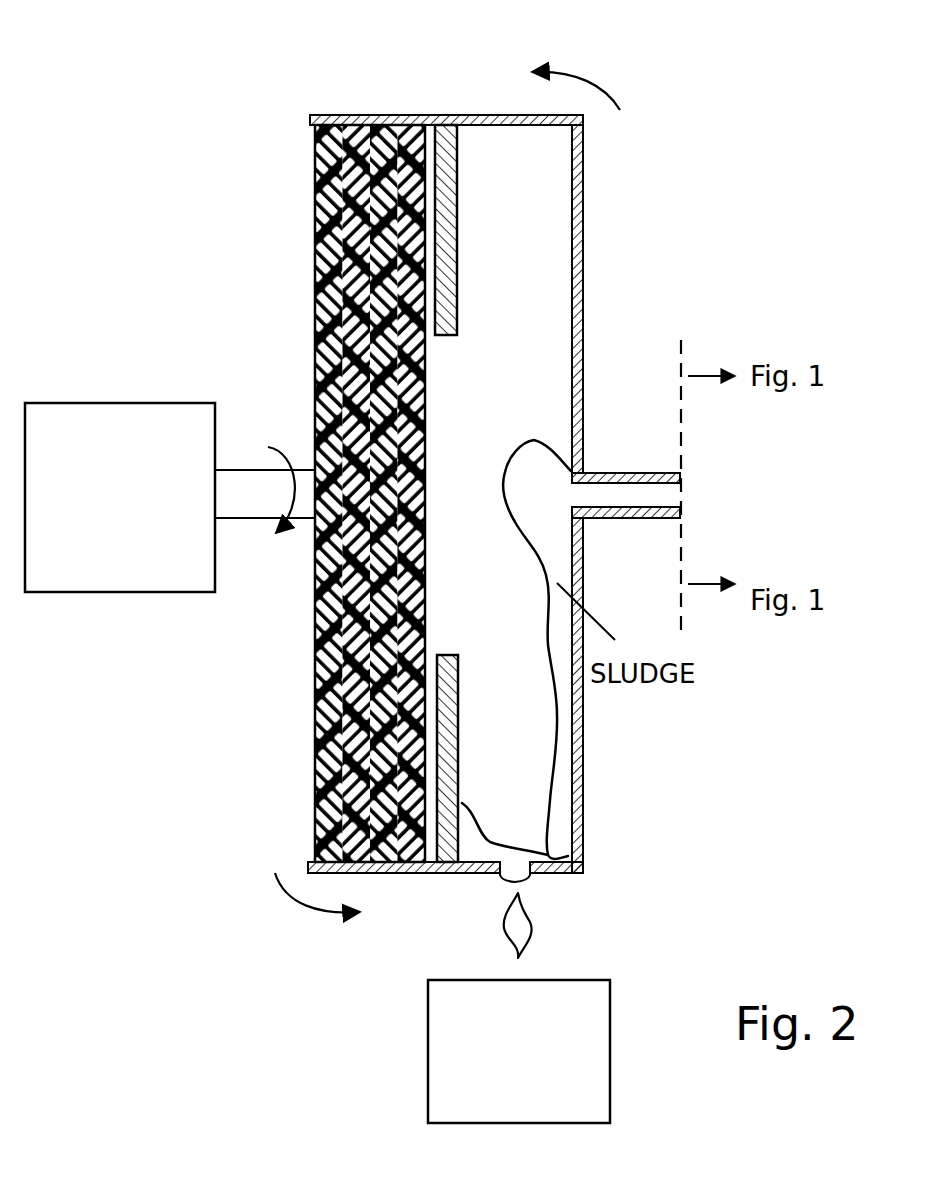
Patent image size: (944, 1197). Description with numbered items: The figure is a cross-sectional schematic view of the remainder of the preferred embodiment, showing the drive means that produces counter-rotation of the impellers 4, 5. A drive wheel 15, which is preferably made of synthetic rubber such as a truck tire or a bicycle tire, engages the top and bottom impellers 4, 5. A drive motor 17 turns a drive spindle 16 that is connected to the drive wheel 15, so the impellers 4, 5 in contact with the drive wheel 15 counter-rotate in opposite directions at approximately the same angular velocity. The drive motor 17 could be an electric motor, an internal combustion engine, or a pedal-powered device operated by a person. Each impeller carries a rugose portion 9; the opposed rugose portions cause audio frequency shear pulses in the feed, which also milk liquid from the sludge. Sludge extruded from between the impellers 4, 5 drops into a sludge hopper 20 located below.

The impeller 4 is at (578, 795).
The impeller 5 is at (440, 118).
The rugose portion 9 is at (621, 505).
The drive wheel 15 is at (313, 250).
The drive spindle 16 is at (245, 465).
The drive motor 17 is at (120, 497).
The sludge hopper 20 is at (519, 1051).